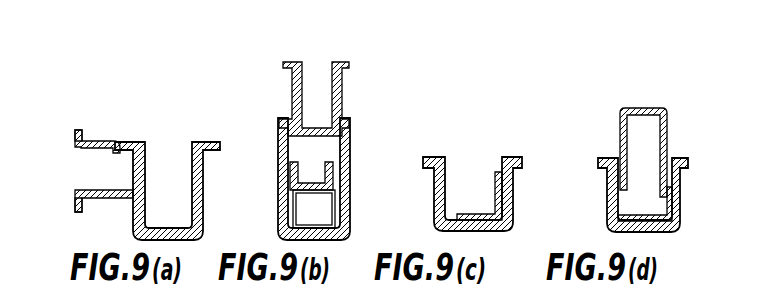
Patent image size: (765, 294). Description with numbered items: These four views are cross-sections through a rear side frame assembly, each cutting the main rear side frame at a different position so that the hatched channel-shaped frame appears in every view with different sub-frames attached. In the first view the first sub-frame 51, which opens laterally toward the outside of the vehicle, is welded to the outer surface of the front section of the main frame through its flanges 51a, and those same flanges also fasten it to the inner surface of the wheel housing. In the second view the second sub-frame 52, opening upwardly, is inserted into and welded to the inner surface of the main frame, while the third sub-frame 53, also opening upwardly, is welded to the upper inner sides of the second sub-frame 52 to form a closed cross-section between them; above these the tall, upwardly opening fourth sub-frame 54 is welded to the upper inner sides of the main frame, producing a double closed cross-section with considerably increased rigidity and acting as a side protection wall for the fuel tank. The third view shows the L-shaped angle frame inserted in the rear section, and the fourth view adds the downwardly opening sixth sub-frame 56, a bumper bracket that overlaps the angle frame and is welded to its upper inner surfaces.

The first sub-frame 51 is at (96, 143).
The flanges 51a is at (80, 211).
The second sub-frame 52 is at (316, 225).
The third sub-frame 53 is at (313, 182).
The fourth sub-frame 54 is at (295, 62).
The sixth sub-frame 56 is at (621, 108).